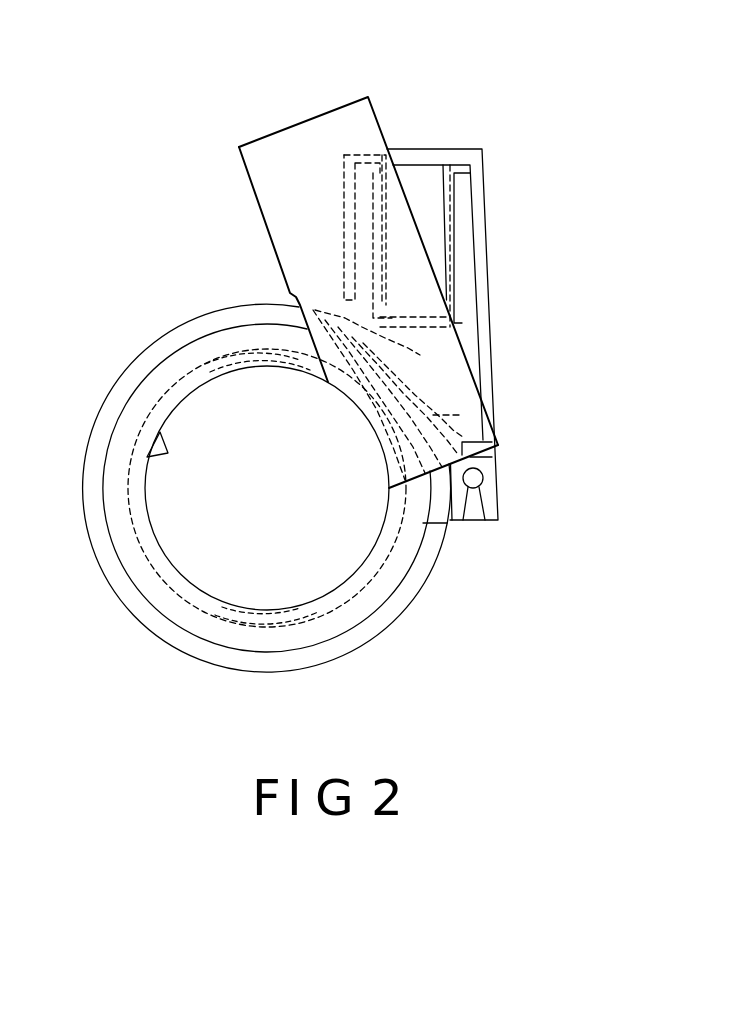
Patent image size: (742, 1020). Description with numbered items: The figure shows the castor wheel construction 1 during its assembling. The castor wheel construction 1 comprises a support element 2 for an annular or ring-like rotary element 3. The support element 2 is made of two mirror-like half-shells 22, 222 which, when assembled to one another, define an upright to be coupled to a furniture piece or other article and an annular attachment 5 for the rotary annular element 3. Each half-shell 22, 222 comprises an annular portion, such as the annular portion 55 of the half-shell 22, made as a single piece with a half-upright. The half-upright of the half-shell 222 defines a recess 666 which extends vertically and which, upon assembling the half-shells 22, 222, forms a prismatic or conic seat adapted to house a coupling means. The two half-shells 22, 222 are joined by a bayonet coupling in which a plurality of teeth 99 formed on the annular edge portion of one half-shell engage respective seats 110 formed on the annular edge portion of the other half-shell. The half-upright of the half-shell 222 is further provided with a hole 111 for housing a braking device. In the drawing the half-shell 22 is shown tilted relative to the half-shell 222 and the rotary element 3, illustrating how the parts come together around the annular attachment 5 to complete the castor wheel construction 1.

The castor wheel construction 1 is at (537, 143).
The support element 2 is at (262, 233).
The half-shell 22 is at (307, 117).
The half-shell 222 is at (488, 217).
The recess 666 is at (415, 175).
The rotary element 3 is at (123, 623).
The annular attachment 5 is at (168, 453).
The annular portion 55 is at (250, 662).
The teeth 99 is at (225, 372).
The seats 110 is at (305, 367).
The hole 111 is at (483, 480).